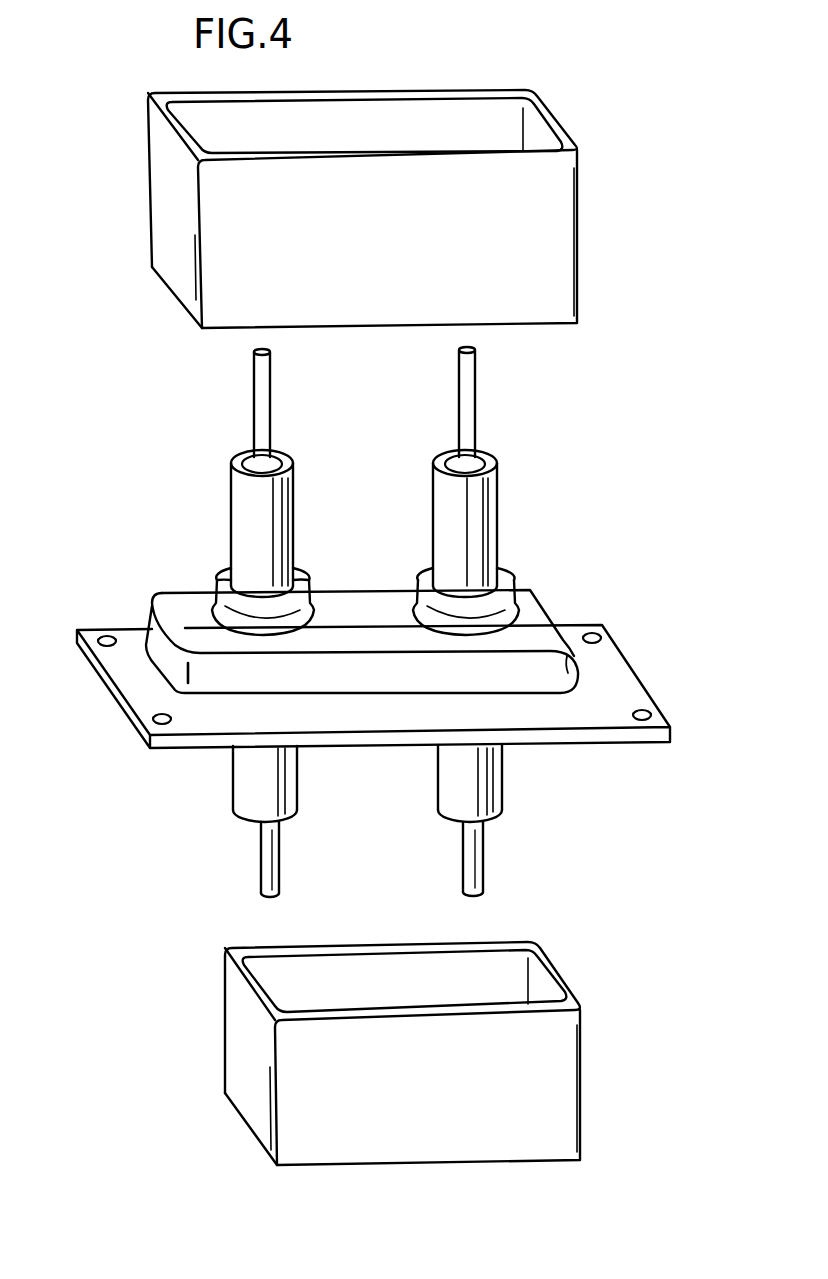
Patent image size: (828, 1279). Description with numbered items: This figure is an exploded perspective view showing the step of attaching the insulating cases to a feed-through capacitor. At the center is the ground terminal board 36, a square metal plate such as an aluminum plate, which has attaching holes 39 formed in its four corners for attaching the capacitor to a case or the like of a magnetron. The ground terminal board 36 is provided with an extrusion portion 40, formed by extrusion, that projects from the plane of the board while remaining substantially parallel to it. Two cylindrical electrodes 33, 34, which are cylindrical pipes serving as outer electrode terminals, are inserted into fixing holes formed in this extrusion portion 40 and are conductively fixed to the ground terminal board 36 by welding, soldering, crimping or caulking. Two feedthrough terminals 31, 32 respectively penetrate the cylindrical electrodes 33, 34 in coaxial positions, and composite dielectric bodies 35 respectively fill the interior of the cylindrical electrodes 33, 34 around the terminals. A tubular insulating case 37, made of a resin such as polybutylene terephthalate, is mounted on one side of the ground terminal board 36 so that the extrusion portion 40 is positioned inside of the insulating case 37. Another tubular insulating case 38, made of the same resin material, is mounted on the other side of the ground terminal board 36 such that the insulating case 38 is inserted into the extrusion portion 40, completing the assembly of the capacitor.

The feedthrough terminal 31 is at (257, 419).
The feedthrough terminal 32 is at (468, 387).
The cylindrical electrode 33 is at (246, 535).
The cylindrical electrode 34 is at (487, 503).
The composite dielectric body 35 is at (279, 448).
The ground terminal board 36 is at (624, 697).
The insulating case 37 is at (543, 263).
The insulating case 38 is at (557, 1063).
The attaching hole 39 is at (104, 637).
The extrusion portion 40 is at (528, 629).